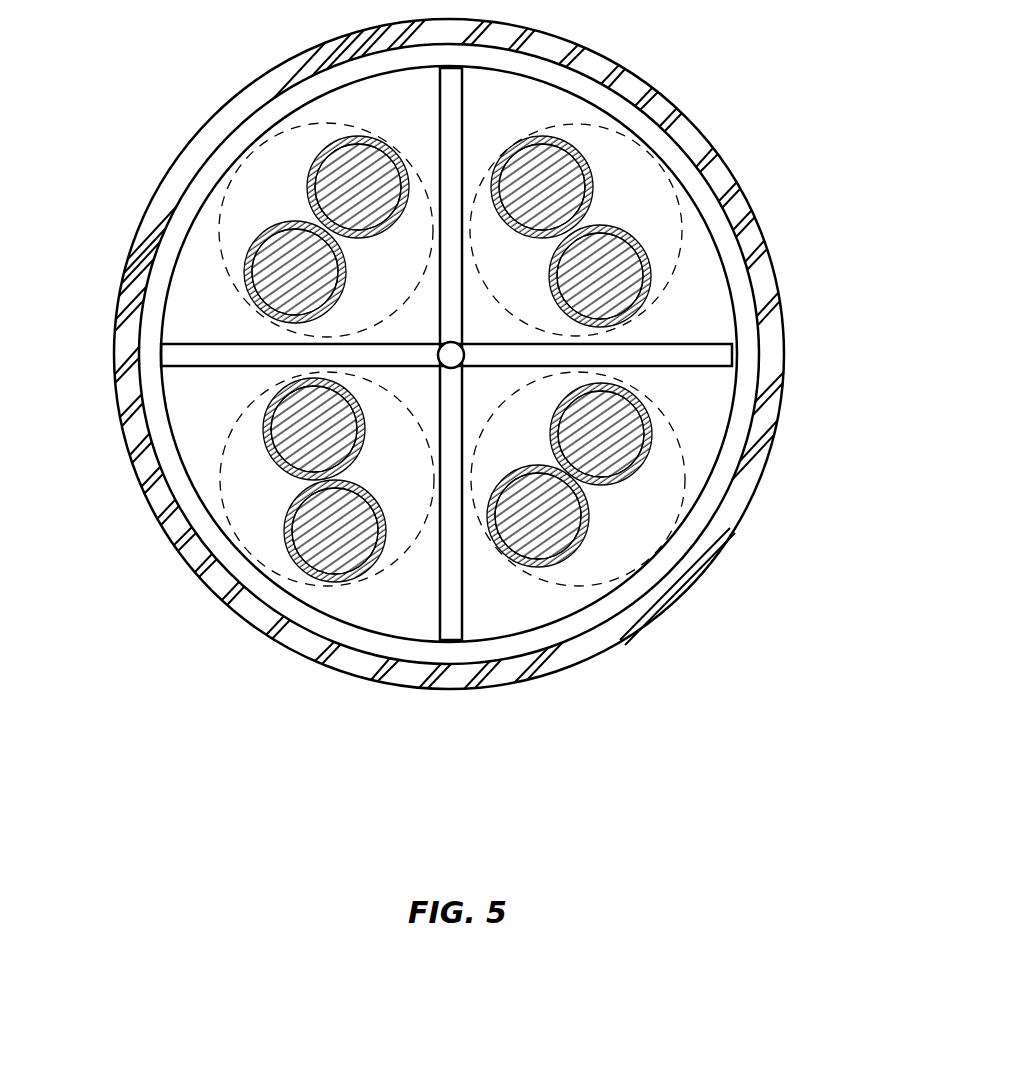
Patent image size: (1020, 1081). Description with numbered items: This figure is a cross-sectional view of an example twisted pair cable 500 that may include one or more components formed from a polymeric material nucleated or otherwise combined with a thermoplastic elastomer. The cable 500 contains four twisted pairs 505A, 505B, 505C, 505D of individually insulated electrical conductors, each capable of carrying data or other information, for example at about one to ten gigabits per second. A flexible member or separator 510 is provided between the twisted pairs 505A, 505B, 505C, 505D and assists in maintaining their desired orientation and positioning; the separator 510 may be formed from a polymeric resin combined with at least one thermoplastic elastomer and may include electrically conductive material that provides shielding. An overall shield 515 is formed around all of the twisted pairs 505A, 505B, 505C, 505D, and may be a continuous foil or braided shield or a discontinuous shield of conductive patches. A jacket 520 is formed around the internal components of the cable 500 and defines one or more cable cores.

The twisted pair cable 500 is at (178, 733).
The twisted pair 505A is at (630, 195).
The twisted pair 505B is at (645, 486).
The twisted pair 505C is at (255, 468).
The twisted pair 505D is at (293, 172).
The separator 510 is at (468, 127).
The overall shield 515 is at (655, 580).
The jacket 520 is at (782, 340).